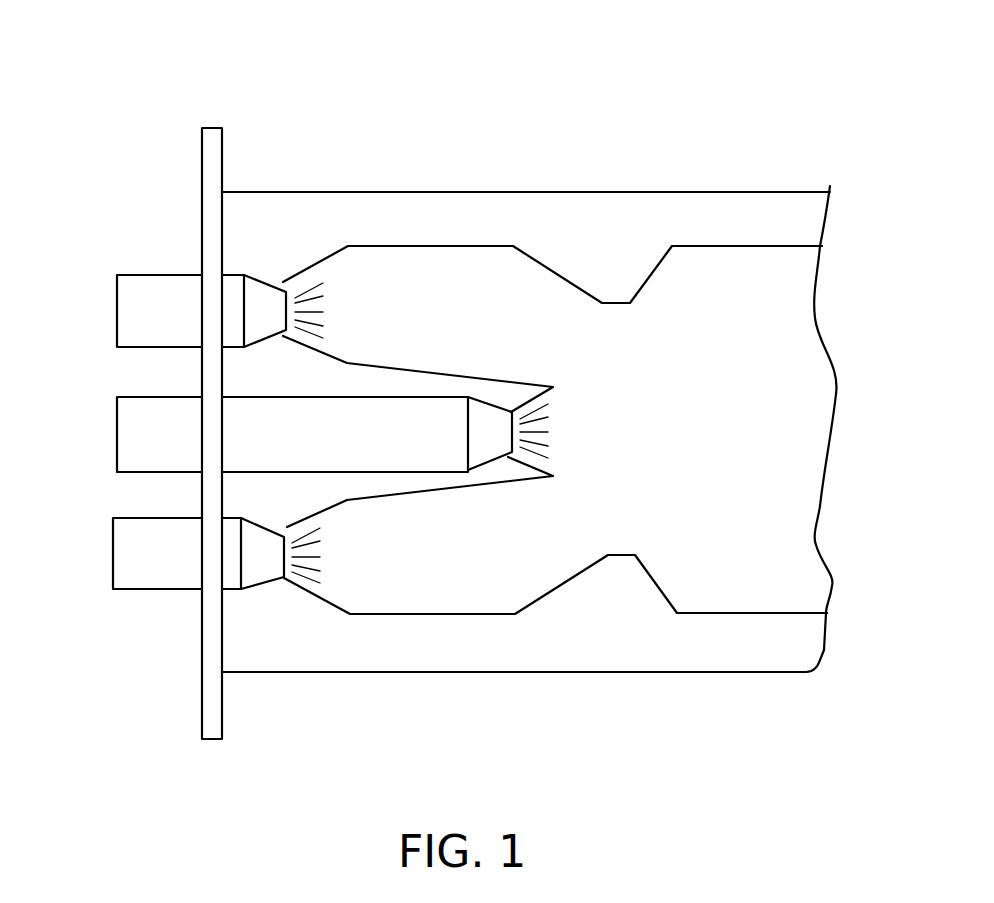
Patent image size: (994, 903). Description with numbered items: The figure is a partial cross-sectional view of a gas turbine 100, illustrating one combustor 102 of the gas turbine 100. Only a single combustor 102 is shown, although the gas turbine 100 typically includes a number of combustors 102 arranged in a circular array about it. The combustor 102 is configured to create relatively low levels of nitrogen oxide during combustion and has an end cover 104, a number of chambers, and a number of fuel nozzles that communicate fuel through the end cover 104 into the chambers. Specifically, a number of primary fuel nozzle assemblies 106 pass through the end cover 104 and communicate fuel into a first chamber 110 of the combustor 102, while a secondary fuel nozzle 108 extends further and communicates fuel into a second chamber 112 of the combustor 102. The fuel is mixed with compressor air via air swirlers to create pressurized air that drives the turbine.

The gas turbine 100 is at (80, 69).
The combustor 102 is at (605, 238).
The end cover 104 is at (201, 237).
The primary fuel nozzle assemblies 106 is at (135, 305).
The secondary fuel nozzle 108 is at (133, 430).
The first chamber 110 is at (455, 315).
The second chamber 112 is at (767, 440).